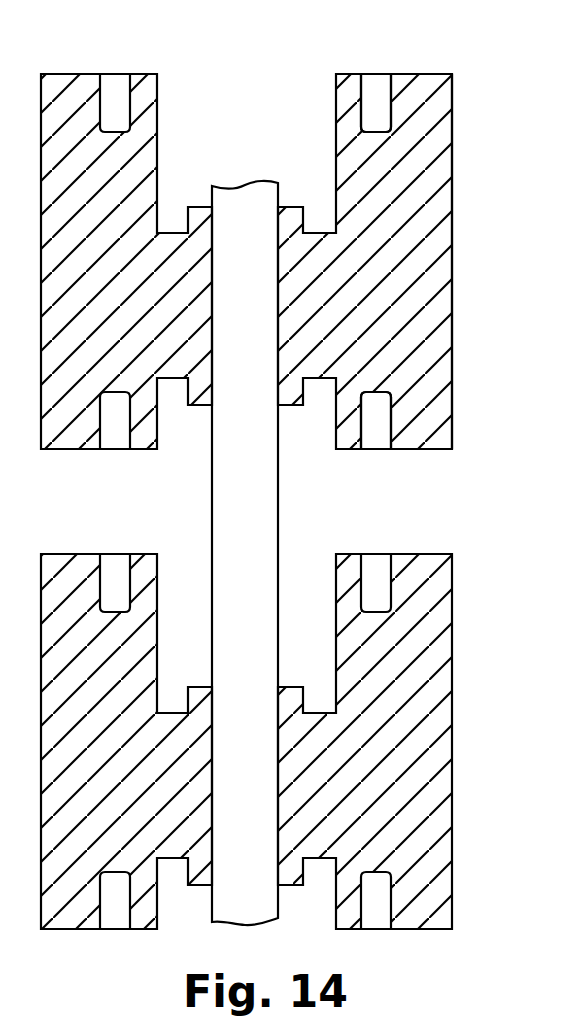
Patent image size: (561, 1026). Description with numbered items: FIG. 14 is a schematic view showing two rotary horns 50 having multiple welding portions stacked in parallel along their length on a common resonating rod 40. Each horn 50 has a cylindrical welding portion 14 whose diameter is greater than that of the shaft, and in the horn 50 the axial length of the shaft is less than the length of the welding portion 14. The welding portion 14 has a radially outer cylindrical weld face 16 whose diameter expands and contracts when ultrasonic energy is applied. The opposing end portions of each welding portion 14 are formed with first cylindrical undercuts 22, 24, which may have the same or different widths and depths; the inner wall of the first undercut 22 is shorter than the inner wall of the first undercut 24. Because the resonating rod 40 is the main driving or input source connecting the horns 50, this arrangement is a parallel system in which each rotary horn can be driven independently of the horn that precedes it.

The welding portion 14 is at (398, 268).
The weld face 16 is at (454, 127).
The first cylindrical undercut 22 is at (388, 420).
The first cylindrical undercut 24 is at (390, 105).
The resonating rod 40 is at (242, 200).
The horn 50 is at (279, 478).